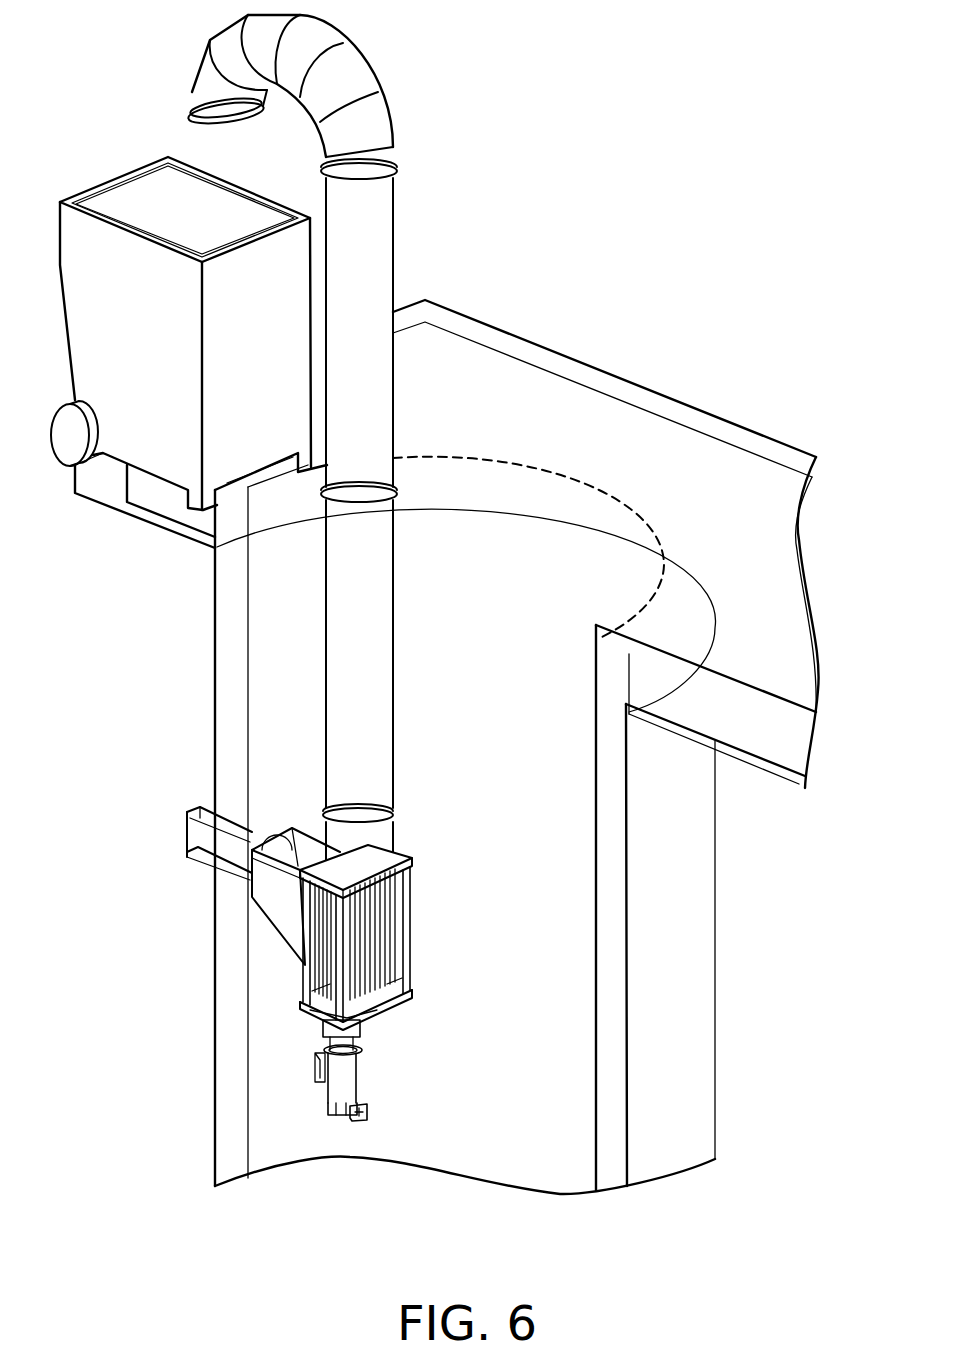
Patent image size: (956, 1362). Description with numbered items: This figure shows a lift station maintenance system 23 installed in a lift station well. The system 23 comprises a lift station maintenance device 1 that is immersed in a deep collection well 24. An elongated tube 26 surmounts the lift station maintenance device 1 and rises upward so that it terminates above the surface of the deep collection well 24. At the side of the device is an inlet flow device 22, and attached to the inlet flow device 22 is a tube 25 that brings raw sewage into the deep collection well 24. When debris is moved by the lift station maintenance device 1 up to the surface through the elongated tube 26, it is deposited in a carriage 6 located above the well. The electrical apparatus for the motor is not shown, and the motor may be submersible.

The lift station maintenance device 1 is at (380, 958).
The carriage 6 is at (137, 357).
The inlet flow device 22 is at (280, 915).
The lift station maintenance system 23 is at (423, 615).
The deep collection well 24 is at (526, 775).
The tube 25 is at (205, 840).
The elongated tube 26 is at (387, 237).